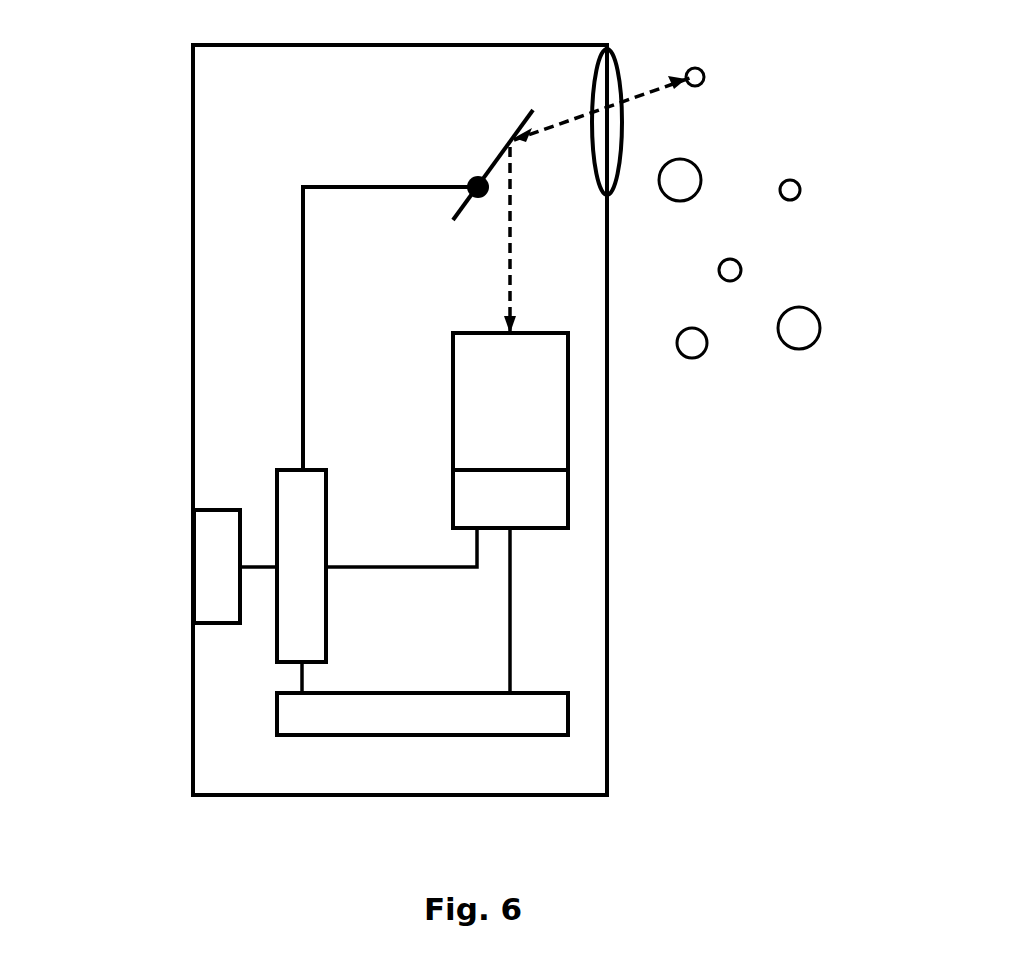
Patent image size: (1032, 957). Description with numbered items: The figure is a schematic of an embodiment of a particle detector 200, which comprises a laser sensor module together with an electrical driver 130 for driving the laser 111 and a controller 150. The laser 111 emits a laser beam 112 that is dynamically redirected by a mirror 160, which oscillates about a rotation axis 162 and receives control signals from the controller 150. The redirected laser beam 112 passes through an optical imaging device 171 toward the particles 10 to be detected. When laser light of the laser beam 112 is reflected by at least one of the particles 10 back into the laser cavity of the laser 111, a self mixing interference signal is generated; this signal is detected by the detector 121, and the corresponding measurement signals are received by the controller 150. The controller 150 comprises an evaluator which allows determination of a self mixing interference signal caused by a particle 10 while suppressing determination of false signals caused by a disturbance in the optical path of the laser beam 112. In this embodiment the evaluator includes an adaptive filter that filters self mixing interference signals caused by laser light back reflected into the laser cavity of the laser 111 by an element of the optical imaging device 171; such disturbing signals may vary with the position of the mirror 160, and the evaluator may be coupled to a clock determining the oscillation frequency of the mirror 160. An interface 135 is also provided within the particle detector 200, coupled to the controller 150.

The particle 10 is at (805, 193).
The laser 111 is at (453, 427).
The laser beam 112 is at (505, 297).
The detector 121 is at (453, 495).
The electrical driver 130 is at (277, 713).
The interface 135 is at (195, 565).
The controller 150 is at (287, 470).
The mirror 160 is at (533, 110).
The rotation axis 162 is at (472, 180).
The optical imaging device 171 is at (617, 77).
The particle detector 200 is at (193, 328).